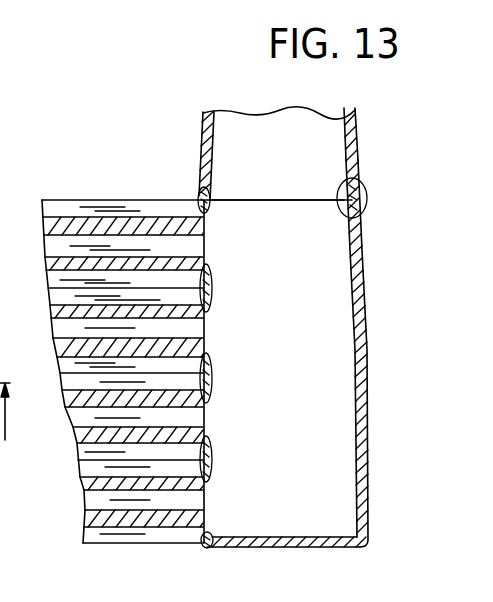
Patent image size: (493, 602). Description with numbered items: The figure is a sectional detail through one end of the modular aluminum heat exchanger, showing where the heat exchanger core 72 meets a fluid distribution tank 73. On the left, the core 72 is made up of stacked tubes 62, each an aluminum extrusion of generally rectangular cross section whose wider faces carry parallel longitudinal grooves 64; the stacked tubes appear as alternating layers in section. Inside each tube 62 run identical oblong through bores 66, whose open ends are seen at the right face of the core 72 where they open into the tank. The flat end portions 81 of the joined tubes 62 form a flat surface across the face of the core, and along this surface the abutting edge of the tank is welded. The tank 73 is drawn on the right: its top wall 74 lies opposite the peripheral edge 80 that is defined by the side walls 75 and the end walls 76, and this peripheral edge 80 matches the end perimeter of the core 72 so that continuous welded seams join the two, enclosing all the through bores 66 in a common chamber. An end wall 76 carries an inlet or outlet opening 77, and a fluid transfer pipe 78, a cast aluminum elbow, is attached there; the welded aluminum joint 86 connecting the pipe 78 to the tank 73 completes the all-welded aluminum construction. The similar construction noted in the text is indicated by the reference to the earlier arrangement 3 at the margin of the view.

The heat exchanger core 72 is at (58, 201).
The through bores 66 is at (127, 327).
The longitudinal grooves 64 is at (55, 367).
The tube 62 is at (210, 399).
The flat end portions 81 is at (212, 225).
The peripheral edge 80 is at (207, 418).
The fluid transfer pipe 78 is at (357, 138).
The inlet or outlet opening 77 is at (357, 168).
The welded aluminum joint 86 is at (372, 208).
The fluid distribution tank 73 is at (331, 331).
The top wall 74 is at (368, 448).
The side walls 75 is at (310, 429).
The end walls 76 is at (268, 550).
The section view arrow 3 is at (5, 429).